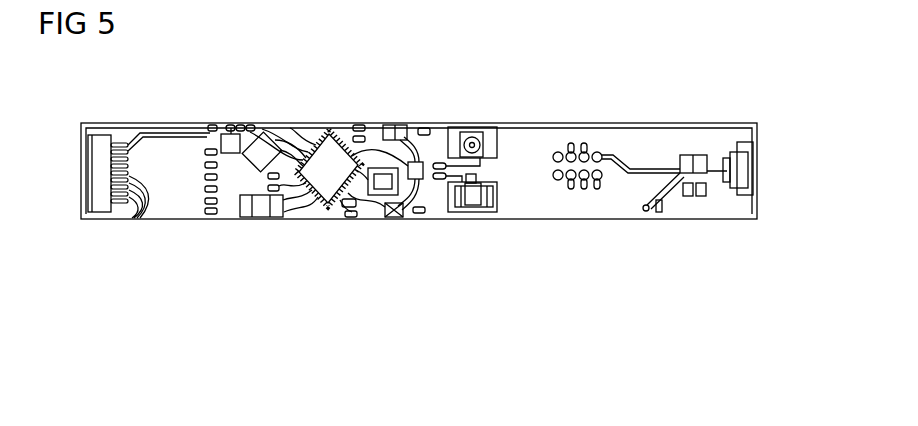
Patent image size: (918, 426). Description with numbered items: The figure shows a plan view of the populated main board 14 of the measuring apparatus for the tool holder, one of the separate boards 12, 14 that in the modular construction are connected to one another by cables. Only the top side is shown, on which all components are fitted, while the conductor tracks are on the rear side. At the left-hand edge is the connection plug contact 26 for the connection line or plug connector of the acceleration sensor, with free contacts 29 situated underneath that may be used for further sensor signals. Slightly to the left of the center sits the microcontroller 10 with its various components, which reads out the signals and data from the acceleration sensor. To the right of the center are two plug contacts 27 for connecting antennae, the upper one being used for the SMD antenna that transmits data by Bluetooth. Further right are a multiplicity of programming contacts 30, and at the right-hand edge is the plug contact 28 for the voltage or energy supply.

The microcontroller 10 is at (328, 152).
The board 12 is at (781, 132).
The main board 14 is at (469, 147).
The connection plug contact 26 is at (104, 147).
The plug contact 27 is at (476, 140).
The plug contact 28 is at (740, 162).
The free contacts 29 is at (127, 205).
The programming contacts 30 is at (593, 186).